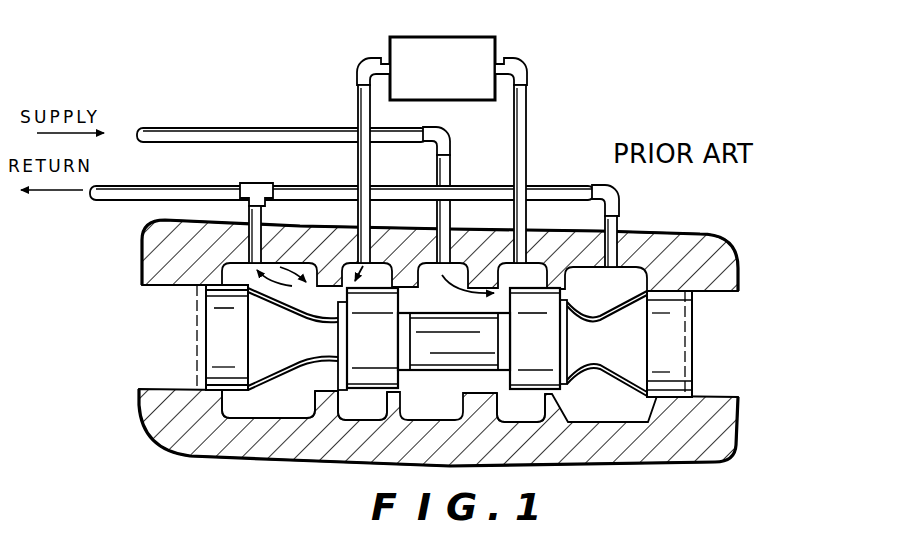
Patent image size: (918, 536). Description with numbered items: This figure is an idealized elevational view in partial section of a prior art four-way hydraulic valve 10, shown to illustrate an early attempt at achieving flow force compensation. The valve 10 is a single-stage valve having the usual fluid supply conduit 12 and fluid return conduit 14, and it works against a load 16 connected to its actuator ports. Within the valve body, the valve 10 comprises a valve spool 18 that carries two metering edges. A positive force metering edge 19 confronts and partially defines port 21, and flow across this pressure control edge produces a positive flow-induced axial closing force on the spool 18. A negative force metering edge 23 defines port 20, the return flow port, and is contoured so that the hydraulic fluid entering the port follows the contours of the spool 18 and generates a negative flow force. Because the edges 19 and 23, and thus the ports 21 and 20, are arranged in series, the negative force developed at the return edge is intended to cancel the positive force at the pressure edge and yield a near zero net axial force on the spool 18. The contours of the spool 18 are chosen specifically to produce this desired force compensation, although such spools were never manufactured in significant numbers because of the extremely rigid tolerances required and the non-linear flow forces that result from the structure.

The valve 10 is at (733, 232).
The fluid supply conduit 12 is at (190, 127).
The fluid return conduit 14 is at (157, 184).
The load 16 is at (454, 37).
The valve spool 18 is at (235, 334).
The positive force metering edge 19 is at (502, 394).
The port 20 is at (330, 387).
The port 21 is at (497, 388).
The negative force metering edge 23 is at (343, 394).